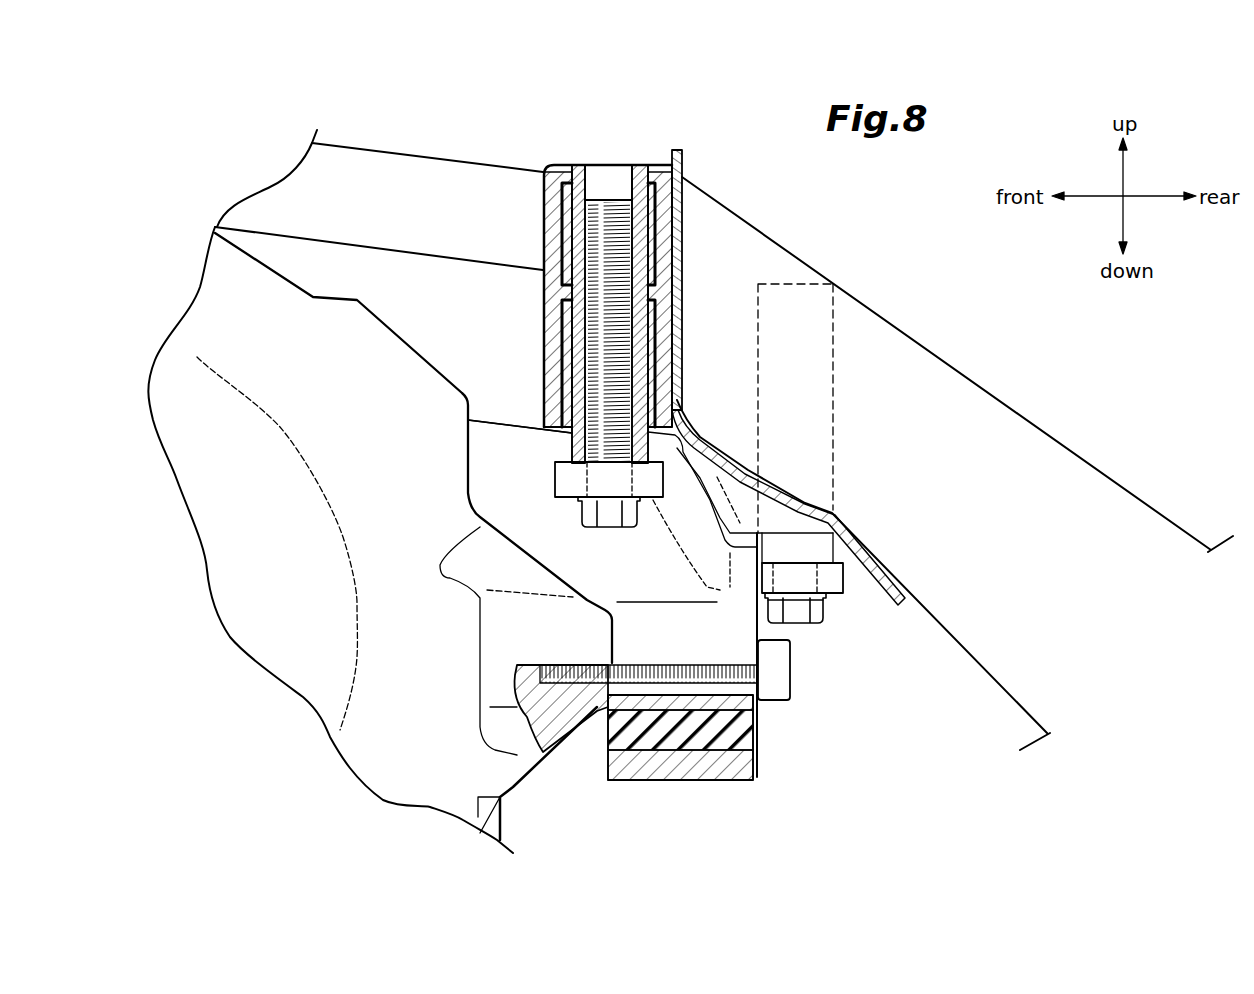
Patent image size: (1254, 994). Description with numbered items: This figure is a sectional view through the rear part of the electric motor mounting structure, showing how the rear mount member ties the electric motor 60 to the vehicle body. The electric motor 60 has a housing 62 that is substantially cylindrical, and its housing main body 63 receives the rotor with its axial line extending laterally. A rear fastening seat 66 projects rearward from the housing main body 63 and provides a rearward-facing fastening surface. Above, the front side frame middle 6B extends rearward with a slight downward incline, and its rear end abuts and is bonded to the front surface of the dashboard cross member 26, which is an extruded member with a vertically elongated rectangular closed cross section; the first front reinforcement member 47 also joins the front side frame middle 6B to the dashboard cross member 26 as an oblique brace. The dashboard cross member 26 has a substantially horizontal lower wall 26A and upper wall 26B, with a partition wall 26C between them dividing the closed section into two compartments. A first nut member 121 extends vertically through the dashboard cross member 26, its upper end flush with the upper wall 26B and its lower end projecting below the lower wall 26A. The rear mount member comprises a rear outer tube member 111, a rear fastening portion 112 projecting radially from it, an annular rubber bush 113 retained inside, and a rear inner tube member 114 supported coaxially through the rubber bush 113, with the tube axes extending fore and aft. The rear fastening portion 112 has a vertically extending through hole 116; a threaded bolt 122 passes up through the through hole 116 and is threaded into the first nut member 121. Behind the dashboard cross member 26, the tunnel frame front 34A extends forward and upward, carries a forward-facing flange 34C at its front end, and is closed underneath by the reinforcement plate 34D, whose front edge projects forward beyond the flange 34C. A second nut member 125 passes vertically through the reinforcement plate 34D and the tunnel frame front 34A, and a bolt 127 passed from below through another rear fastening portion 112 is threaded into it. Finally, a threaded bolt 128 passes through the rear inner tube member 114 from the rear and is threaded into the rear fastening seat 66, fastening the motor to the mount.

The first front reinforcement member 47 is at (343, 170).
The front side frame middle 6B is at (403, 280).
The dashboard cross member 26 is at (605, 317).
The lower wall 26A is at (543, 427).
The upper wall 26B is at (563, 168).
The partition wall 26C is at (545, 285).
The first nut member 121 is at (635, 167).
The threaded bolt 122 is at (598, 213).
The tunnel frame front 34A is at (1064, 471).
The flange 34C is at (685, 160).
The reinforcement plate 34D is at (897, 610).
The second nut member 125 is at (834, 338).
The rear fastening portion 112 is at (565, 478).
The through hole 116 is at (580, 500).
The bolt 127 is at (815, 610).
The threaded bolt 128 is at (777, 683).
The rear inner tube member 114 is at (750, 710).
The rubber bush 113 is at (747, 747).
The rear outer tube member 111 is at (720, 772).
The rear fastening seat 66 is at (570, 730).
The electric motor 60 is at (322, 743).
The housing 62 is at (383, 775).
The housing main body 63 is at (223, 592).